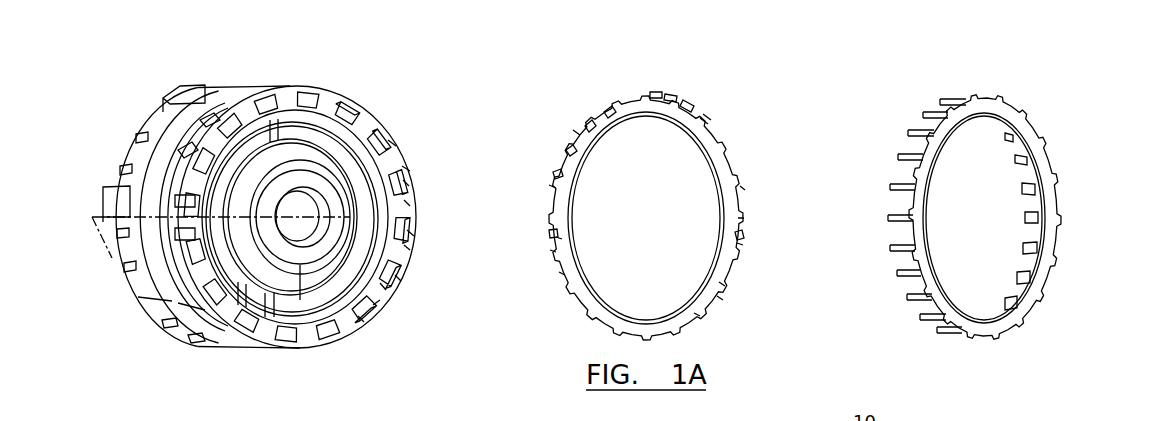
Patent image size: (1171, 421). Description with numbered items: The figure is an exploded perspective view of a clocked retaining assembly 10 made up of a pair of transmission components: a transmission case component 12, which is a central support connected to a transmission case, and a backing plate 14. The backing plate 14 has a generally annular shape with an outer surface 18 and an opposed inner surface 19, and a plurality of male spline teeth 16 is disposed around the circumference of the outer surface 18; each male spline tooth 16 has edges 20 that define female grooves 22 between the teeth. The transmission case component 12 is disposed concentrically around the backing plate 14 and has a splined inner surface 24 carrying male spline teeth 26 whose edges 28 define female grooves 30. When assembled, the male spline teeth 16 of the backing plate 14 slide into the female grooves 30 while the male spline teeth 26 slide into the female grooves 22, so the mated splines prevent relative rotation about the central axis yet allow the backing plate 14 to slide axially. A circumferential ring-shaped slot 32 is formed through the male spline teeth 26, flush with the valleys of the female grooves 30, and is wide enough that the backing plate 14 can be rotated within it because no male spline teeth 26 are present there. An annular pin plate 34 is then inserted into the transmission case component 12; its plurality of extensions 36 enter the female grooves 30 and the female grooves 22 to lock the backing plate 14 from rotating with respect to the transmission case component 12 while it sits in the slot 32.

The clocked retaining assembly 10 is at (850, 97).
The transmission case component 12 is at (415, 128).
The backing plate 14 is at (790, 152).
The male spline teeth 16 is at (587, 123).
The outer surface 18 is at (713, 138).
The inner surface 19 is at (583, 163).
The edges 20 is at (700, 122).
The female grooves 22 is at (573, 132).
The splined inner surface 24 is at (347, 122).
The male spline teeth 26 is at (402, 168).
The edges 28 is at (407, 203).
The female grooves 30 is at (405, 183).
The circumferential slot 32 is at (373, 155).
The pin plate 34 is at (1083, 187).
The extensions 36 is at (895, 187).